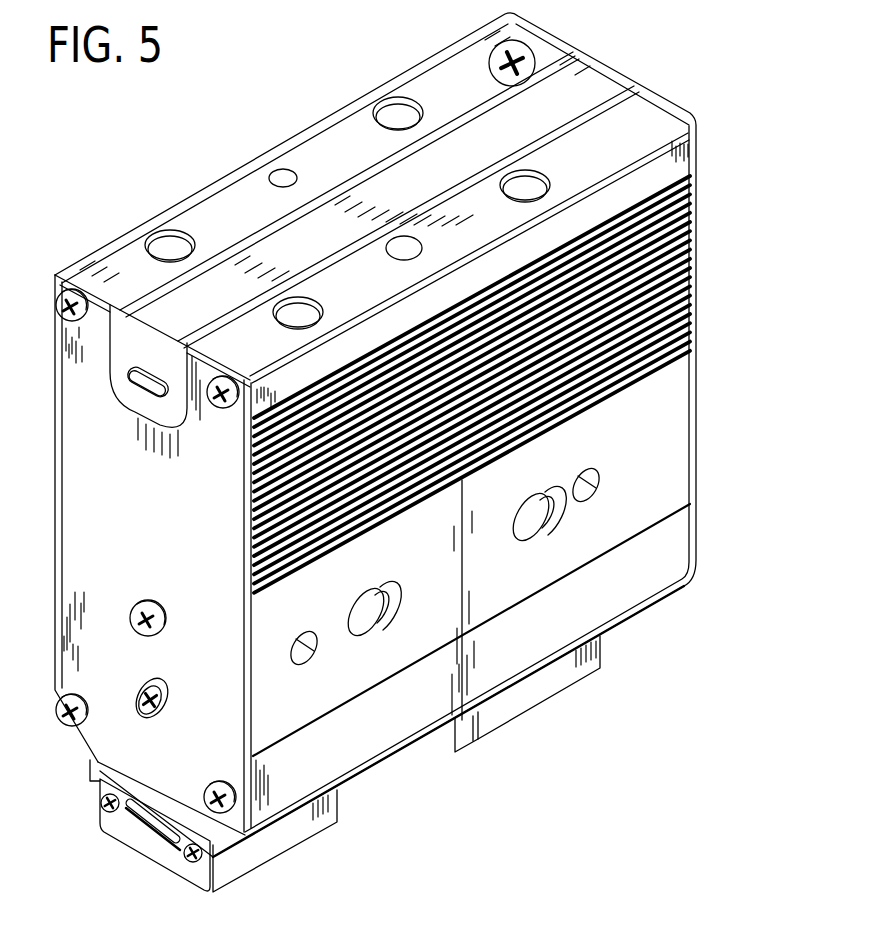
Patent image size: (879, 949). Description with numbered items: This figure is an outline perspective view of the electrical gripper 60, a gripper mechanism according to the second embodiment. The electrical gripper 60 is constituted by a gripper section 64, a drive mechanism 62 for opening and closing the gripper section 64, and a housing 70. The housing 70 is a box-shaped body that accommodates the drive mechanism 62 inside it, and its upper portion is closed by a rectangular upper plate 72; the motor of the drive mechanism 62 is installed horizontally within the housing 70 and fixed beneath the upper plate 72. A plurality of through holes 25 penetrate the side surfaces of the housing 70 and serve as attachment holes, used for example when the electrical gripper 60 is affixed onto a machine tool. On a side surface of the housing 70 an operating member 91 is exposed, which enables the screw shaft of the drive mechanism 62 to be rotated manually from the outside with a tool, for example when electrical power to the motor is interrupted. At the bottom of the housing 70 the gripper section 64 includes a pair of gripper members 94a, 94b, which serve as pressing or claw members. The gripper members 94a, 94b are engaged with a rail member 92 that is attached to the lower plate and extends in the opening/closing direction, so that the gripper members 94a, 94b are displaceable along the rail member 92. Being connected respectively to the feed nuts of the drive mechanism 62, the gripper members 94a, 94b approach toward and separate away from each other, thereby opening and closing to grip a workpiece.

The electrical gripper 60 is at (778, 119).
The upper plate 72 is at (632, 112).
The drive mechanism 62 is at (620, 437).
The housing 70 is at (74, 540).
The operating member 91 is at (153, 723).
The gripper section 64 is at (604, 683).
The through holes 25 is at (542, 530).
The gripper member 94a is at (300, 828).
The gripper member 94b is at (530, 700).
The rail member 92 is at (150, 808).